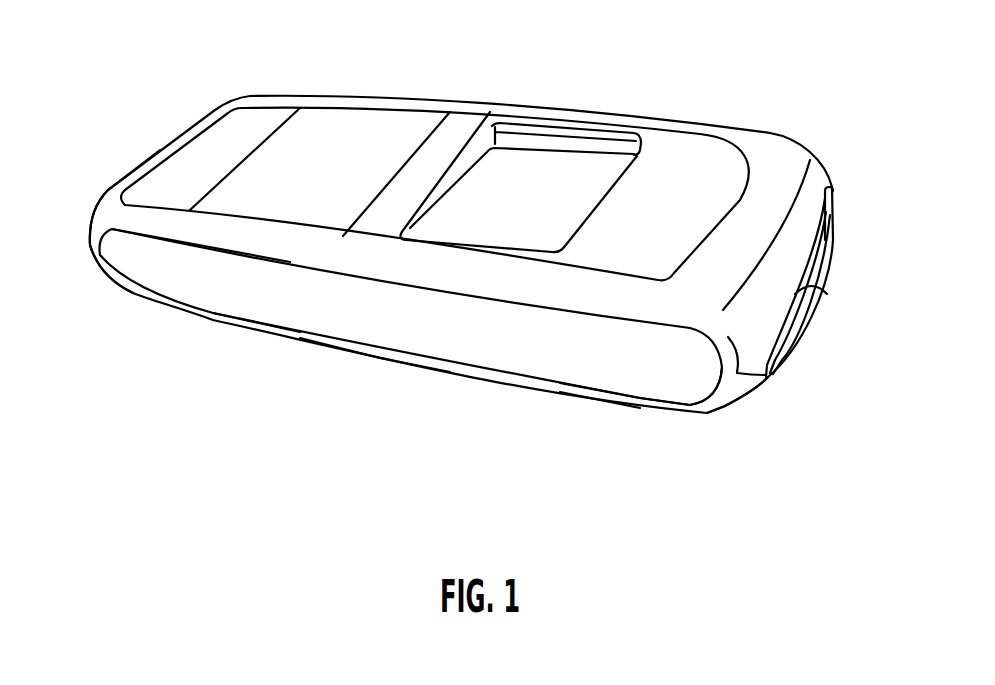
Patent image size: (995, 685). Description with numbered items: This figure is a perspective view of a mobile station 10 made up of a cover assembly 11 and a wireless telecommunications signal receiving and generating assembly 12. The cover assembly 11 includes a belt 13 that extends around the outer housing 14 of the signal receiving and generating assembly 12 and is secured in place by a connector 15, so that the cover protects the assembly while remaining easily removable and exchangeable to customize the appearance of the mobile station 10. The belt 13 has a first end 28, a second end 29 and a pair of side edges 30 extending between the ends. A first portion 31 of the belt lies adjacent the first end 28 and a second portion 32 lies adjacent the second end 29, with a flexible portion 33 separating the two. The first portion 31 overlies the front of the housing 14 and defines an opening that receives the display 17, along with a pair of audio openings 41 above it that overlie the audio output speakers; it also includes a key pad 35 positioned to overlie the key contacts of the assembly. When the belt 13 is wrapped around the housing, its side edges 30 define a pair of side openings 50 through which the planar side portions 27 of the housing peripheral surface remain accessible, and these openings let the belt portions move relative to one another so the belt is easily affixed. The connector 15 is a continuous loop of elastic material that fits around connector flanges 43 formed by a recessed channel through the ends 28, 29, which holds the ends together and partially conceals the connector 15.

The mobile station 10 is at (770, 500).
The cover assembly 11 is at (815, 365).
The wireless telecommunications signal receiving and generating assembly 12 is at (488, 355).
The belt 13 is at (623, 407).
The outer housing 14 is at (337, 337).
The connector 15 is at (768, 379).
The display 17 is at (533, 158).
The side portions 27 is at (203, 290).
The first end 28 is at (720, 403).
The second end 29 is at (748, 378).
The side edges 30 is at (565, 388).
The first portion 31 is at (372, 100).
The second portion 32 is at (413, 362).
The flexible portion 33 is at (90, 256).
The key pad 35 is at (331, 174).
The audio openings 41 is at (707, 170).
The connector flanges 43 is at (805, 332).
The side openings 50 is at (273, 313).